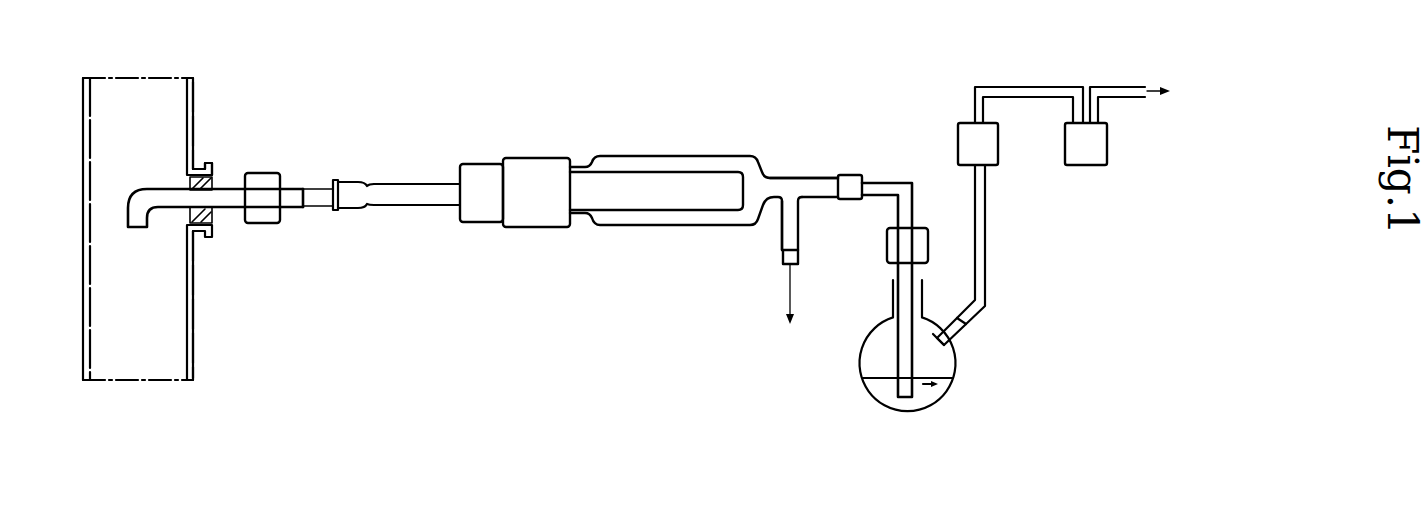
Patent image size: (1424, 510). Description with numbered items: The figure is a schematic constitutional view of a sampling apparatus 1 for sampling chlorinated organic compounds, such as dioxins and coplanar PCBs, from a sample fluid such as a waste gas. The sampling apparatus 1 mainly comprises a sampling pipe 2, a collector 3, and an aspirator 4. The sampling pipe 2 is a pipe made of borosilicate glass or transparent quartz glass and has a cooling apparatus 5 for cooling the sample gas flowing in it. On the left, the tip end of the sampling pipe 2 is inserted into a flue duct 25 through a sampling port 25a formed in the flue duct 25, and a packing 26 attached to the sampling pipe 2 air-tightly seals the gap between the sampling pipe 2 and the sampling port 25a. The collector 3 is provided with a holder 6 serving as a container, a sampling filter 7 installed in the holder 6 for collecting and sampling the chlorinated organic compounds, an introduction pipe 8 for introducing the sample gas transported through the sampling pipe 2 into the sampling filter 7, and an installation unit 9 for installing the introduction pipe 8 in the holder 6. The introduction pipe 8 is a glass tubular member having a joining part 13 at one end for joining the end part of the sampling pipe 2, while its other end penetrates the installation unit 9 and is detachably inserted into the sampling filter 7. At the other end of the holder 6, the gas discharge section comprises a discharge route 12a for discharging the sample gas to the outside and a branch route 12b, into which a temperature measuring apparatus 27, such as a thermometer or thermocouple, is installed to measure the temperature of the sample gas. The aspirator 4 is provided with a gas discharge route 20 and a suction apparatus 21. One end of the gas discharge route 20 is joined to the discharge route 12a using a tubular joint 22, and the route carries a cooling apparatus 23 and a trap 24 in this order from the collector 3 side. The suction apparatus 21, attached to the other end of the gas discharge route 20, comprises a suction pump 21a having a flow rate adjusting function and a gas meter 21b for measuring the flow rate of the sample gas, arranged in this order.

The sampling apparatus 1 is at (711, 134).
The sampling pipe 2 is at (237, 192).
The collector 3 is at (704, 182).
The aspirator 4 is at (994, 274).
The cooling apparatus 5 is at (270, 223).
The holder 6 is at (660, 155).
The sampling filter 7 is at (620, 175).
The introduction pipe 8 is at (417, 192).
The installation unit 9 is at (548, 222).
The discharge route 12a is at (817, 180).
The branch route 12b is at (779, 243).
The joining part 13 is at (348, 202).
The gas discharge route 20 is at (908, 274).
The suction apparatus 21 is at (1064, 106).
The suction pump 21a is at (990, 158).
The gas meter 21b is at (1092, 160).
The tubular joint 22 is at (855, 182).
The cooling apparatus 23 is at (892, 247).
The trap 24 is at (927, 362).
The flue duct 25 is at (155, 332).
The sampling port 25a is at (212, 215).
The packing 26 is at (199, 172).
The temperature measuring apparatus 27 is at (789, 299).